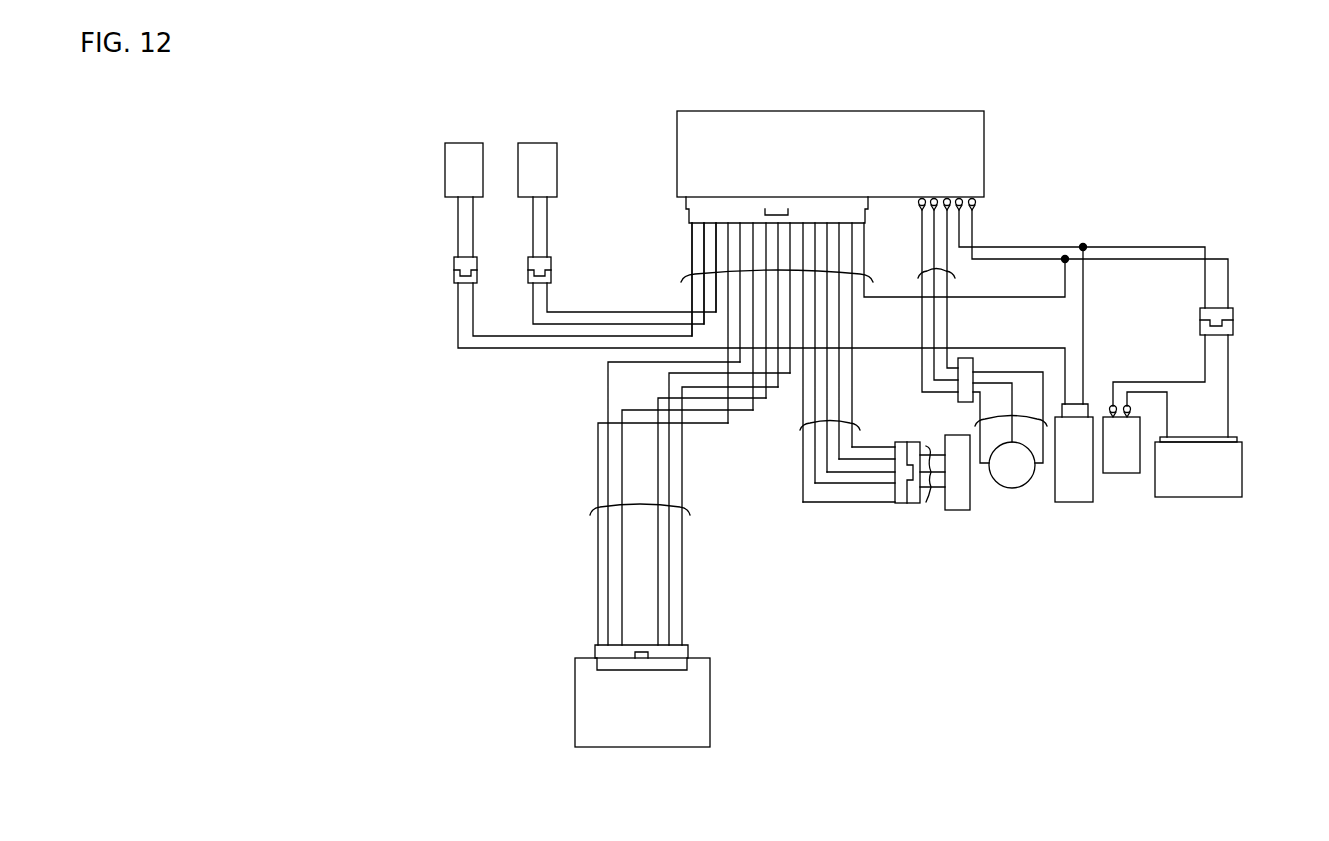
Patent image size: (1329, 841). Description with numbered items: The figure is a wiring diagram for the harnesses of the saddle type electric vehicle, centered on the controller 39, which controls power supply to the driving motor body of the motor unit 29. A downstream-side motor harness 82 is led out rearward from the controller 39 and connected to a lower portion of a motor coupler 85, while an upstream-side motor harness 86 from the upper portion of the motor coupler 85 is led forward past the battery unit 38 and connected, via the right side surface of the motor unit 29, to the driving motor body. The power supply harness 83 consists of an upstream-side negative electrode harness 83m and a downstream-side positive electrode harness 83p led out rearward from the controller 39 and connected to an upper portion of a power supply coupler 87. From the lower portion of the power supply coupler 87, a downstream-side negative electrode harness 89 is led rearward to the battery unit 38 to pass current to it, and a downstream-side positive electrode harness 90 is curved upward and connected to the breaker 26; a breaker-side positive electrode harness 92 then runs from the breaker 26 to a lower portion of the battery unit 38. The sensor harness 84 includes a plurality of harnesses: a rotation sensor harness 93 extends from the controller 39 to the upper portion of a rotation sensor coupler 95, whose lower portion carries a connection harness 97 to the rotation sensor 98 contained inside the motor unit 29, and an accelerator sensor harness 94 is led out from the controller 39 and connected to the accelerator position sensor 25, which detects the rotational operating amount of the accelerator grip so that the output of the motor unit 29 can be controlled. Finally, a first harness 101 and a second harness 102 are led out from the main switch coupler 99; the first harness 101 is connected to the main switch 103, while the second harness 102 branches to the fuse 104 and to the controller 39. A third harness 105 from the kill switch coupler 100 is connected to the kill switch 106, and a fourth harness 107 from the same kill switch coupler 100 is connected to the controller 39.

The controller 39 is at (935, 112).
The main switch 103 is at (452, 143).
The kill switch 106 is at (527, 143).
The first harness 101 is at (466, 222).
The third harness 105 is at (547, 226).
The main switch coupler 99 is at (454, 272).
The kill switch coupler 100 is at (551, 266).
The fourth harness 107 is at (590, 322).
The second harness 102 is at (497, 340).
The sensor harness 84 is at (683, 278).
The accelerator sensor harness 94 is at (690, 512).
The accelerator position sensor 25 is at (712, 710).
The rotation sensor harness 93 is at (800, 426).
The rotation sensor coupler 95 is at (898, 504).
The connection harness 97 is at (929, 503).
The rotation sensor 98 is at (955, 511).
The downstream-side motor harness 82 is at (918, 273).
The motor coupler 85 is at (966, 358).
The upstream-side motor harness 86 is at (975, 420).
The motor unit 29 is at (1012, 489).
The fuse 104 is at (1074, 502).
The power supply harness 83 is at (1093, 247).
The upstream-side negative electrode harness 83m is at (1180, 247).
The downstream-side positive electrode harness 83p is at (1178, 262).
The power supply coupler 87 is at (1234, 318).
The downstream-side positive electrode harness 90 is at (1185, 385).
The downstream-side negative electrode harness 89 is at (1222, 372).
The breaker-side positive electrode harness 92 is at (1167, 420).
The breaker 26 is at (1125, 474).
The battery unit 38 is at (1243, 470).